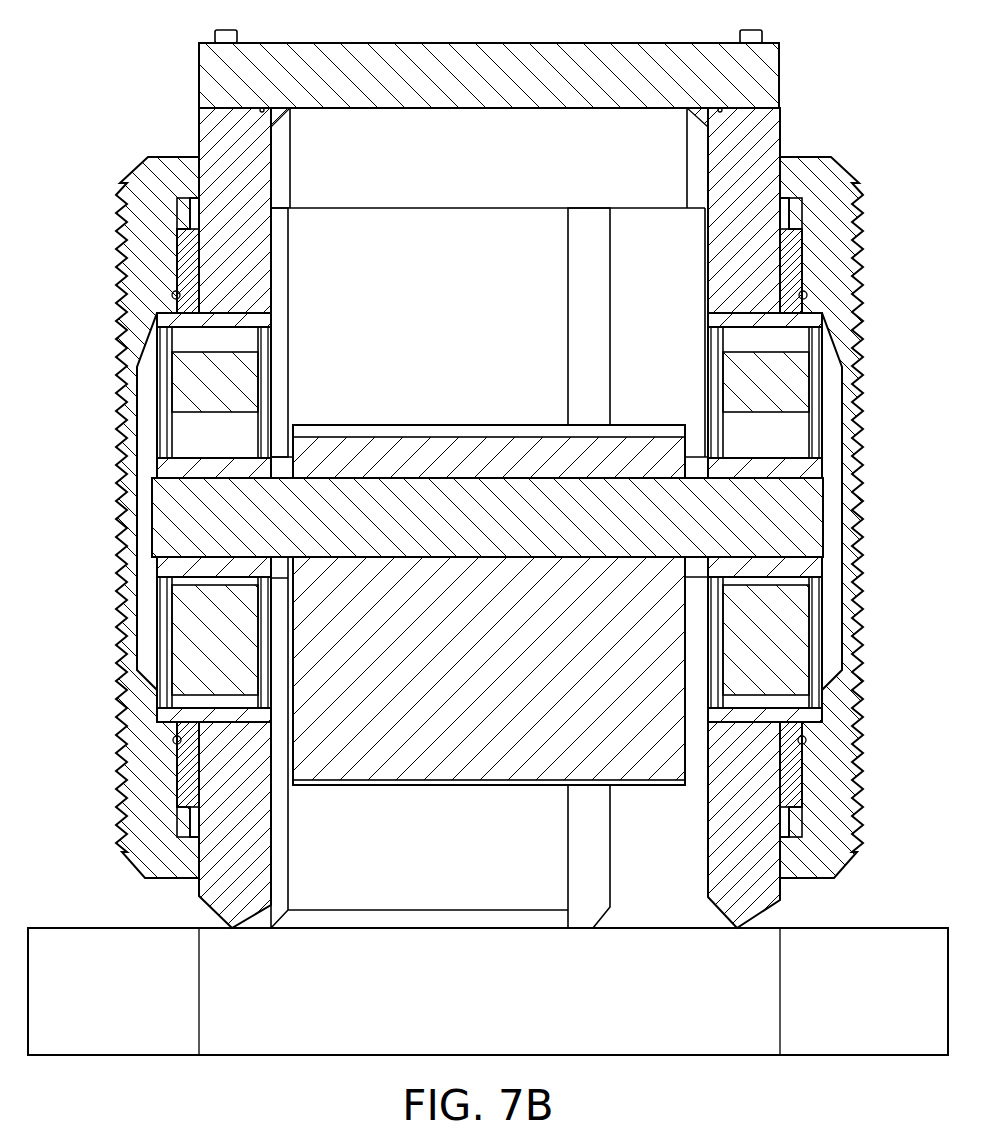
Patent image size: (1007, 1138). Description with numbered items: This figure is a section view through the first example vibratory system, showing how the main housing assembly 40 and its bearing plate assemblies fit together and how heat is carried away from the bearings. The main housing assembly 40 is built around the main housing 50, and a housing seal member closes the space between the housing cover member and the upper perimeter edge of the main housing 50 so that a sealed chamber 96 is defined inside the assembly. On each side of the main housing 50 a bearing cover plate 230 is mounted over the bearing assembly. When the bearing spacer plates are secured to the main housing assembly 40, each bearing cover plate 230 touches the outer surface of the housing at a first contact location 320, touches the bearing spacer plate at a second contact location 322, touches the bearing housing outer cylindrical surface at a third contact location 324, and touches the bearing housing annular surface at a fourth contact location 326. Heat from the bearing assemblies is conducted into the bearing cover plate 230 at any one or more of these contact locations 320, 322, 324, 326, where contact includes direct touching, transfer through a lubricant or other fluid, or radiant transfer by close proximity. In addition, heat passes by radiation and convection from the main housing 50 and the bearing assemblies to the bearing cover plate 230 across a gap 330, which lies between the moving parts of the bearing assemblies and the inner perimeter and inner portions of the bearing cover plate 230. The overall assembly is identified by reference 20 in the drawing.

The electric motor assembly 20 is at (133, 42).
The main housing assembly 40 is at (795, 60).
The main housing 50 is at (782, 135).
The sealed chamber 96 is at (150, 480).
The bearing cover plate 230 is at (136, 180).
The first contact location 320 is at (197, 178).
The second contact location 322 is at (177, 245).
The third contact location 324 is at (173, 294).
The fourth contact location 326 is at (155, 322).
The gap 330 is at (147, 428).